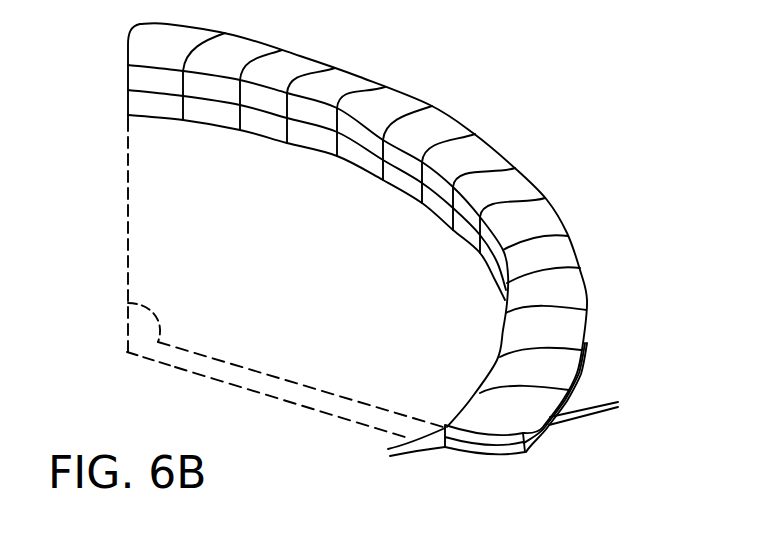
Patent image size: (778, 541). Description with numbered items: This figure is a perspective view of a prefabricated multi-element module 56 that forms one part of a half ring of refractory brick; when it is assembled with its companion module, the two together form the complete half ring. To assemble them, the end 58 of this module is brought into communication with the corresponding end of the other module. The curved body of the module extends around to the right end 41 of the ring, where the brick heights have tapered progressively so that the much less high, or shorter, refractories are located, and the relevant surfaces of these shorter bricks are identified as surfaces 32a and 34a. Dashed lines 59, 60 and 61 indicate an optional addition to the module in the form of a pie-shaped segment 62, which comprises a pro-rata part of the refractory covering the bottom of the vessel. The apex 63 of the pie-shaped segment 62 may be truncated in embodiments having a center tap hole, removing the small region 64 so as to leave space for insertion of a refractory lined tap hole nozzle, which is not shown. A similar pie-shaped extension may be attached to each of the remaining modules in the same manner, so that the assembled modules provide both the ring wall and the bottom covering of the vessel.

The multi-element module 56 is at (327, 269).
The end 58 is at (123, 43).
The dashed line 59 is at (128, 187).
The dashed line 60 is at (293, 380).
The dashed line 61 is at (263, 393).
The pie-shaped segment 62 is at (258, 259).
The apex 63 is at (127, 342).
The small region 64 is at (130, 308).
The surface 32a is at (606, 409).
The surface 34a is at (392, 446).
The right end 41 is at (491, 452).